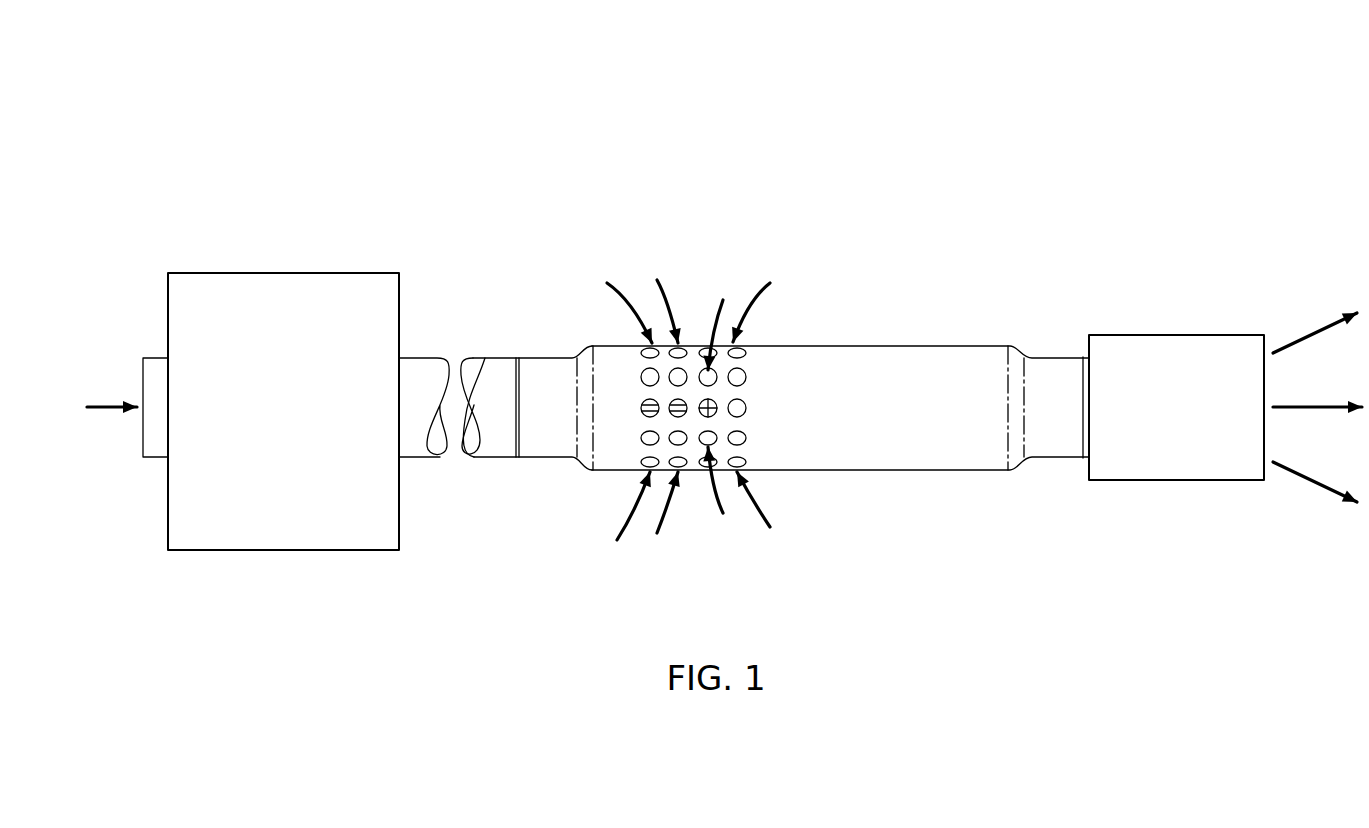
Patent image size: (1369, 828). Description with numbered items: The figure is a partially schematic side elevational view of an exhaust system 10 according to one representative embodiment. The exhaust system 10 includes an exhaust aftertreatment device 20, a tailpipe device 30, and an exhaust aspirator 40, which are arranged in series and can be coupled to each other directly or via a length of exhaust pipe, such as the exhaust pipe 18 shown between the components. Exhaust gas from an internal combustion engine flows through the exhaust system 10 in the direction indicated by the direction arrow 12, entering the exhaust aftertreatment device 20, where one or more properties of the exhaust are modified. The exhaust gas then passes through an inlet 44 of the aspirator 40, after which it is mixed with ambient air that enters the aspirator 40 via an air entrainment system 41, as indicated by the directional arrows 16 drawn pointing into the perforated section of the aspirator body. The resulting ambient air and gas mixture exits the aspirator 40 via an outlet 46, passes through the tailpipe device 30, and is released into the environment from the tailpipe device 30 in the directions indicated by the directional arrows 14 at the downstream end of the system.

The exhaust system 10 is at (922, 118).
The direction arrow 12 is at (98, 412).
The directional arrows 14 is at (1363, 515).
The directional arrows 16 is at (775, 357).
The exhaust pipe 18 is at (150, 364).
The exhaust aftertreatment device 20 is at (410, 293).
The tailpipe device 30 is at (1243, 322).
The exhaust aspirator 40 is at (870, 330).
The air entrainment system 41 is at (635, 455).
The inlet 44 is at (520, 398).
The outlet 46 is at (1090, 380).